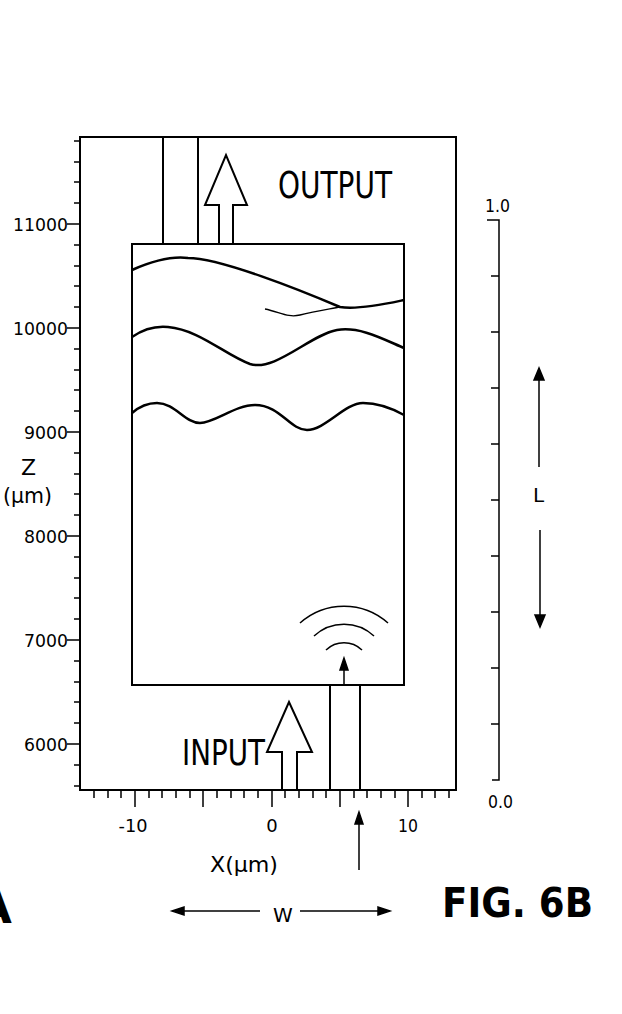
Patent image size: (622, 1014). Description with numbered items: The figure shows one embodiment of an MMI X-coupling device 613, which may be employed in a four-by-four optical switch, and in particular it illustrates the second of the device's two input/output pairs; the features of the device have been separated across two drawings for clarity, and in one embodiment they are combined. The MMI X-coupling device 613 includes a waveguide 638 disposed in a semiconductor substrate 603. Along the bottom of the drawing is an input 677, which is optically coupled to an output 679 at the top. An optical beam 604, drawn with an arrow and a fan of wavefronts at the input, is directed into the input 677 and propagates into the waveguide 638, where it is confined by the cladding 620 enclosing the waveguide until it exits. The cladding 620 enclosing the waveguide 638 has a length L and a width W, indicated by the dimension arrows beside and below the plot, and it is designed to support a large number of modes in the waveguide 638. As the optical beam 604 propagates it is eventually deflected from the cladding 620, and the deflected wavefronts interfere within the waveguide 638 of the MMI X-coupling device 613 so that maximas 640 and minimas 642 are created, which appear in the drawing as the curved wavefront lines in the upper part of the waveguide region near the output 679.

The semiconductor substrate 603 is at (452, 191).
The output 679 is at (198, 157).
The MMI X-coupling device 613 is at (383, 244).
The input 677 is at (360, 707).
The maximas 640 is at (233, 260).
The waveguide 638 is at (132, 337).
The minimas 642 is at (248, 362).
The cladding 620 is at (132, 413).
The optical beam 604 is at (342, 674).